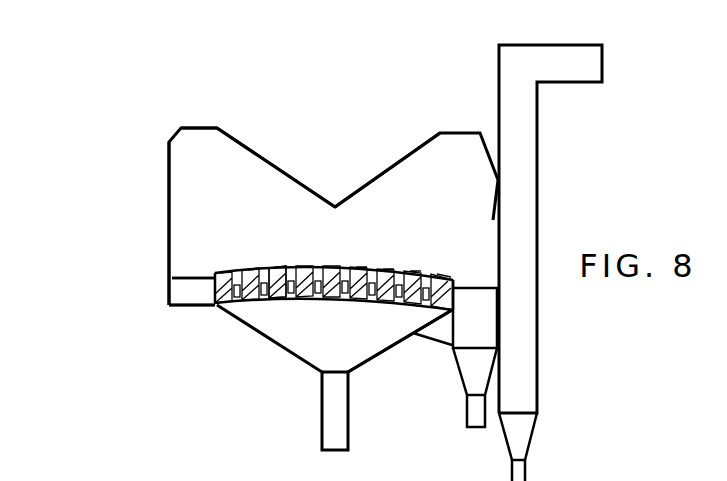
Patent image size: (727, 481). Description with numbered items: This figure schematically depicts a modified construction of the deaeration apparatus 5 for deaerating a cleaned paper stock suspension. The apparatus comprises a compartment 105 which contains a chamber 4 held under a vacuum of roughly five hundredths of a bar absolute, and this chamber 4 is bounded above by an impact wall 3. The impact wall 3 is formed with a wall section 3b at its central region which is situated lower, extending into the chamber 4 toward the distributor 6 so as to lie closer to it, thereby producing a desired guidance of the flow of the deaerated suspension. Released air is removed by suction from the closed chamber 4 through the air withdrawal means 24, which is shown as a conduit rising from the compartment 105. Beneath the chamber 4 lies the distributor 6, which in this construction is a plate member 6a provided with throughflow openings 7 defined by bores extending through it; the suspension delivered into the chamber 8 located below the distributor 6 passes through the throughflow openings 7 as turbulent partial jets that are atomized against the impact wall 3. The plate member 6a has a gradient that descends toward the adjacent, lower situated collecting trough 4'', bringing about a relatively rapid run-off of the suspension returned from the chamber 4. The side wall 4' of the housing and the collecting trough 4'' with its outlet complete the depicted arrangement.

The deaeration apparatus 5 is at (112, 143).
The impact wall 3 is at (197, 128).
The compartment 105 is at (293, 195).
The wall section 3b is at (378, 175).
The chamber 4 is at (333, 216).
The housing side wall 4' is at (121, 223).
The collecting trough 4'' is at (315, 352).
The air withdrawal means 24 is at (527, 50).
The distributor 6 is at (227, 307).
The plate member 6a is at (277, 272).
The chamber 8 is at (341, 338).
The throughflow openings 7 is at (372, 303).